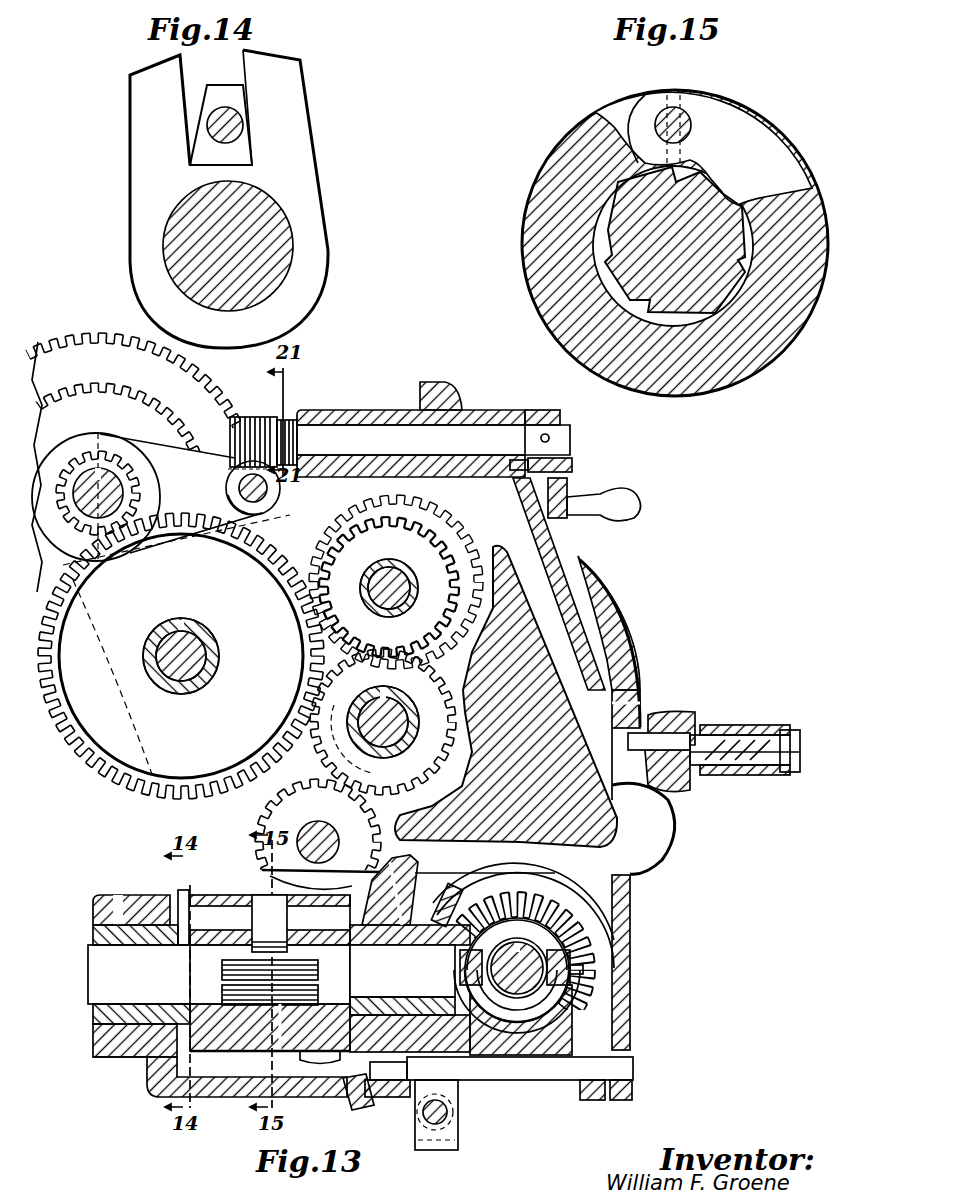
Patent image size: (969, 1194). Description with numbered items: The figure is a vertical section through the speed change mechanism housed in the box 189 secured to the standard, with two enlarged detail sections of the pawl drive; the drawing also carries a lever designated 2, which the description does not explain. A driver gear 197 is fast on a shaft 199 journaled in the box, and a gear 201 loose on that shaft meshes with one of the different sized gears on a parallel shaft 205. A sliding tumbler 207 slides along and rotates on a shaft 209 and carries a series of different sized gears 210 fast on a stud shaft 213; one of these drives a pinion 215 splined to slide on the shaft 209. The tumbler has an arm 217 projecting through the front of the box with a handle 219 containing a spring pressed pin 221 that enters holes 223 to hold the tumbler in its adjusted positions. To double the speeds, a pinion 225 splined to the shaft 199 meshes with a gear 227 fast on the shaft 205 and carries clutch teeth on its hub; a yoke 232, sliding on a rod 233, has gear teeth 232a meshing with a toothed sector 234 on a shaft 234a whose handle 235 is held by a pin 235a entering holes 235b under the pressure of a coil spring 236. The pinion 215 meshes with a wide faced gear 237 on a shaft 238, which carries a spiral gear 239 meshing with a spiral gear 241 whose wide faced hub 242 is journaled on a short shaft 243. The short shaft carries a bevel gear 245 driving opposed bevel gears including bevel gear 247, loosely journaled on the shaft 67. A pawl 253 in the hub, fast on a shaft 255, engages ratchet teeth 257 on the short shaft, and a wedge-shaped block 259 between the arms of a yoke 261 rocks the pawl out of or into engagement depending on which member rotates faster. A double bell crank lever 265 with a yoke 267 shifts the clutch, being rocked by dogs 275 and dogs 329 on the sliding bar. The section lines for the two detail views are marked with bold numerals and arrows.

In FIG. 13, the lever arm 2 is at (150, 442).
In FIG. 13, the shaft 67 is at (530, 956).
In FIG. 13, the box 189 is at (584, 582).
In FIG. 13, the driver gear 197 is at (86, 346).
In FIG. 13, the shaft 199 is at (120, 498).
In FIG. 13, the gear 201 is at (106, 398).
In FIG. 13, the shaft 205 is at (203, 648).
In FIG. 13, the sliding tumbler 207 is at (545, 653).
In FIG. 13, the shaft 209 is at (382, 746).
In FIG. 13, the different sized gears 210 is at (445, 536).
In FIG. 13, the stud shaft 213 is at (410, 580).
In FIG. 13, the pinion 215 is at (383, 722).
In FIG. 13, the arm 217 is at (660, 838).
In FIG. 13, the handle 219 is at (772, 778).
In FIG. 13, the spring pressed pin 221 is at (688, 787).
In FIG. 13, the holes 223 is at (624, 694).
In FIG. 13, the pinion 225 is at (140, 520).
In FIG. 13, the gear 227 is at (106, 781).
In FIG. 13, the yoke 232 is at (262, 513).
In FIG. 13, the gear teeth 232a is at (240, 466).
In FIG. 13, the rod 233 is at (268, 489).
In FIG. 13, the toothed sector 234 is at (297, 414).
In FIG. 13, the shaft 234a is at (458, 430).
In FIG. 13, the handle 235 is at (626, 498).
In FIG. 13, the pin 235a is at (568, 474).
In FIG. 13, the holes 235b is at (540, 453).
In FIG. 13, the coil spring 236 is at (398, 410).
In FIG. 13, the wide faced gear 237 is at (262, 840).
In FIG. 13, the shaft 238 is at (328, 816).
In FIG. 13, the spiral gear 239 is at (410, 988).
In FIG. 13, the spiral gear 241 is at (288, 1097).
In FIG. 15, the wide faced hub 242 is at (812, 282).
In FIG. 13, the wide faced hub 242 is at (222, 900).
In FIG. 14, the short shaft 243 is at (275, 230).
In FIG. 13, the short shaft 243 is at (88, 958).
In FIG. 13, the bevel gear 245 is at (442, 886).
In FIG. 13, the bevel gear 247 is at (520, 882).
In FIG. 15, the pawl 253 is at (710, 130).
In FIG. 13, the pawl 253 is at (265, 900).
In FIG. 14, the shaft 255 is at (240, 135).
In FIG. 15, the shaft 255 is at (683, 118).
In FIG. 13, the shaft 255 is at (188, 892).
In FIG. 15, the ratchet teeth 257 is at (730, 228).
In FIG. 13, the ratchet teeth 257 is at (262, 1004).
In FIG. 14, the wedge-shaped block 259 is at (235, 96).
In FIG. 14, the yoke 261 is at (300, 118).
In FIG. 13, the yoke 261 is at (180, 906).
In FIG. 13, the double bell crank lever 265 is at (634, 1025).
In FIG. 13, the yoke 267 is at (580, 966).
In FIG. 13, the dogs 275 is at (458, 1093).
In FIG. 13, the dogs 329 is at (458, 1135).